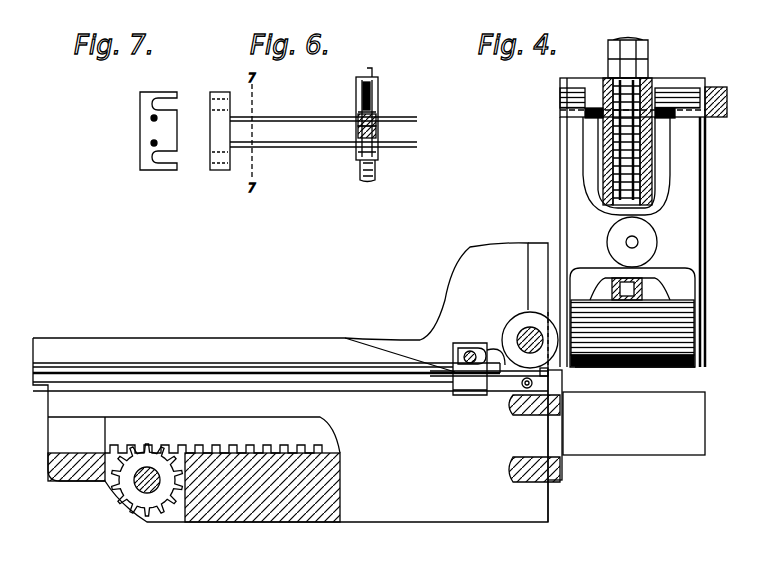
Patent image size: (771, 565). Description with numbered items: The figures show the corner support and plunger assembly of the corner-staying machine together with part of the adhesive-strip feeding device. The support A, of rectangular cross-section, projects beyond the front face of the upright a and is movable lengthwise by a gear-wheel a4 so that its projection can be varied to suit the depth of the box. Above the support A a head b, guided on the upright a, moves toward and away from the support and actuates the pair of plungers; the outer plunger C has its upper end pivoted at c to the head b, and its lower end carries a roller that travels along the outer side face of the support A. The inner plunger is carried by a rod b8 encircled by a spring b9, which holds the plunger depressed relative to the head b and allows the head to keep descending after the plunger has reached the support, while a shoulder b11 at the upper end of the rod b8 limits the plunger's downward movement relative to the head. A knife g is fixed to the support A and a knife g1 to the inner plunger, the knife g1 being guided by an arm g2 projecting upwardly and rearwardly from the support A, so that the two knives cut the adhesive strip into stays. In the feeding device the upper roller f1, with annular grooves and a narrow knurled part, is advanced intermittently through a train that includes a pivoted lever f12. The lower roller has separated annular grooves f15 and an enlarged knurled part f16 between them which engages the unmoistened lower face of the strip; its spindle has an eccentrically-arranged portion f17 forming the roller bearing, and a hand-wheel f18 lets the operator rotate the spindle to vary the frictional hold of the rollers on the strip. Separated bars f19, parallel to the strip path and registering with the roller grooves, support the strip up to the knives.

In FIG. 4, the support A is at (680, 410).
In FIG. 4, the upright a is at (537, 496).
In FIG. 4, the gear-wheel a4 is at (142, 498).
In FIG. 4, the head b is at (690, 82).
In FIG. 4, the shoulder b11 is at (639, 68).
In FIG. 4, the rod b8 is at (650, 163).
In FIG. 4, the spring b9 is at (640, 97).
In FIG. 4, the pivot c is at (655, 100).
In FIG. 4, the plunger C is at (677, 232).
In FIG. 4, the knife g is at (562, 384).
In FIG. 4, the knife g1 is at (603, 362).
In FIG. 4, the arm g2 is at (562, 372).
In FIG. 4, the upper roller f1 is at (483, 345).
In FIG. 6, the pivoted lever f12 is at (355, 110).
In FIG. 6, the annular grooves f15 is at (377, 120).
In FIG. 4, the annular grooves f15 is at (456, 354).
In FIG. 6, the enlarged part f16 is at (380, 135).
In FIG. 6, the eccentrically-arranged portion f17 is at (362, 164).
In FIG. 4, the hand-wheel f18 is at (520, 343).
In FIG. 7, the separated bars f19 is at (154, 118).
In FIG. 6, the separated bars f19 is at (289, 143).
In FIG. 4, the separated bars f19 is at (455, 378).